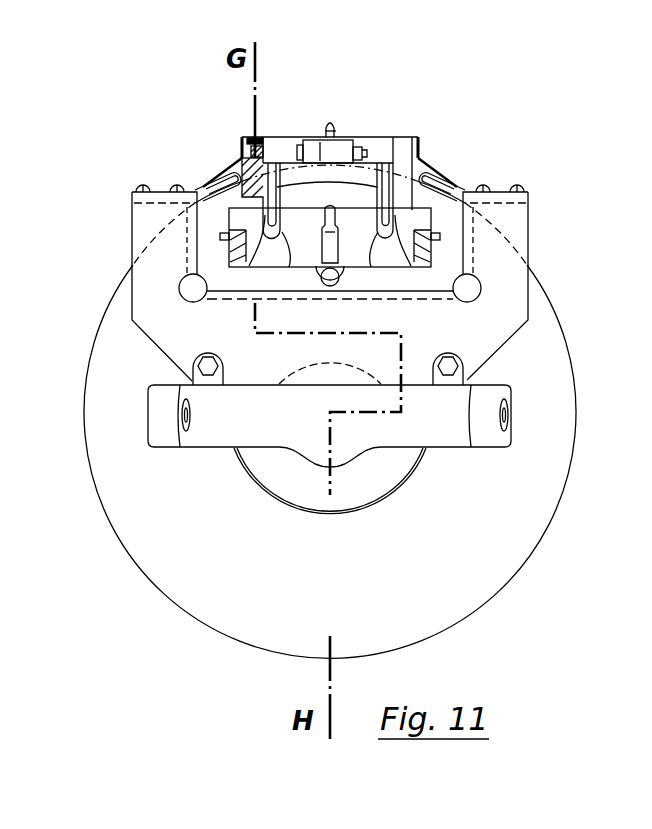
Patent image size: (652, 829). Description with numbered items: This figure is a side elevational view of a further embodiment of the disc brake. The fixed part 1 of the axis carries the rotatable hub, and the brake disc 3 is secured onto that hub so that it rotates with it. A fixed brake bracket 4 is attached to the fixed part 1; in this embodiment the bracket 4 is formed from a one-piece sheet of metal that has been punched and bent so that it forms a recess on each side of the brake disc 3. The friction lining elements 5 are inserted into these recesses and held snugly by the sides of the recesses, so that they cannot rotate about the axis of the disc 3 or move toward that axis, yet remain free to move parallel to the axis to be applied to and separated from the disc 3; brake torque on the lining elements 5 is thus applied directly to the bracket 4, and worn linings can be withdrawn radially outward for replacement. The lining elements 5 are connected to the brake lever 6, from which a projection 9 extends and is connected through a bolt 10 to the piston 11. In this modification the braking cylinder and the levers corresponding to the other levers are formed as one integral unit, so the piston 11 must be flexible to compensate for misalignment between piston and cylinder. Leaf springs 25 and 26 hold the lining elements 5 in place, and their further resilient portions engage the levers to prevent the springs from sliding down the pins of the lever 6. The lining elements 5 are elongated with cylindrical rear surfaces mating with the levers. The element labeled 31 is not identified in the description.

The fixed part of the axis 1 is at (432, 428).
The brake disc 3 is at (520, 512).
The brake bracket 4 is at (500, 283).
The friction lining elements 5 is at (449, 227).
The brake lever 6 is at (283, 147).
The projection 9 is at (352, 153).
The bolt 10 is at (372, 152).
The piston 11 is at (313, 147).
The leaf spring 25 is at (158, 191).
The leaf spring 26 is at (497, 191).
The guide pin 31 is at (308, 228).